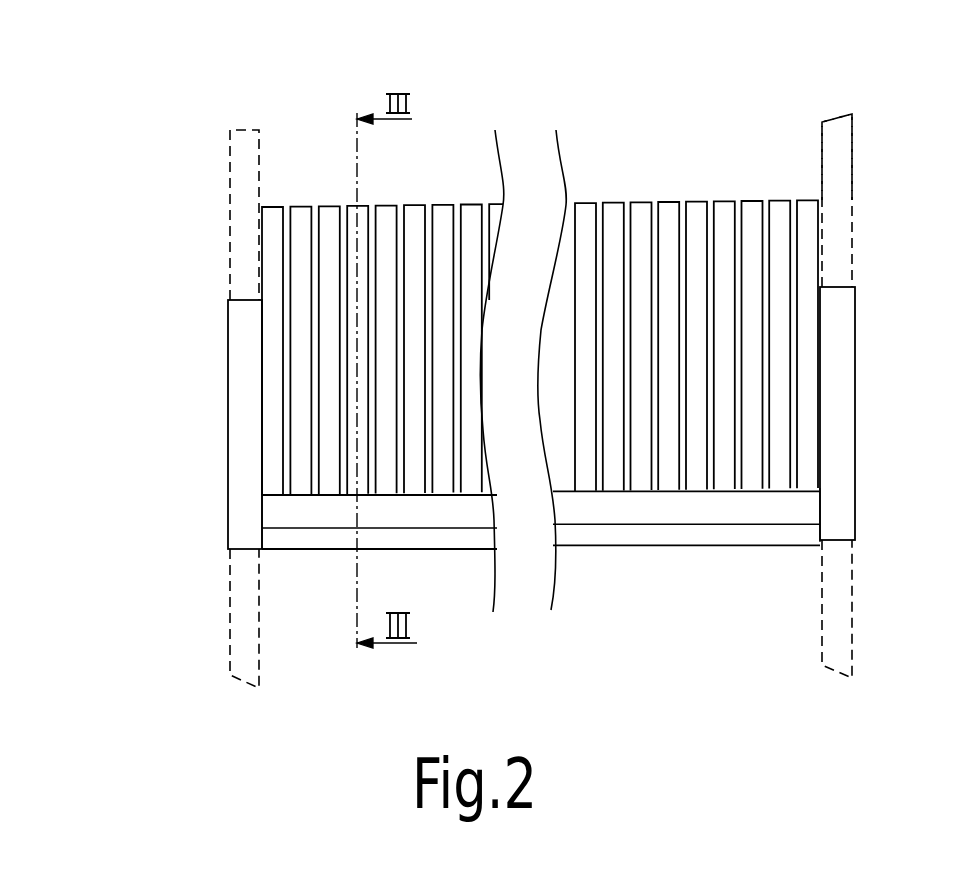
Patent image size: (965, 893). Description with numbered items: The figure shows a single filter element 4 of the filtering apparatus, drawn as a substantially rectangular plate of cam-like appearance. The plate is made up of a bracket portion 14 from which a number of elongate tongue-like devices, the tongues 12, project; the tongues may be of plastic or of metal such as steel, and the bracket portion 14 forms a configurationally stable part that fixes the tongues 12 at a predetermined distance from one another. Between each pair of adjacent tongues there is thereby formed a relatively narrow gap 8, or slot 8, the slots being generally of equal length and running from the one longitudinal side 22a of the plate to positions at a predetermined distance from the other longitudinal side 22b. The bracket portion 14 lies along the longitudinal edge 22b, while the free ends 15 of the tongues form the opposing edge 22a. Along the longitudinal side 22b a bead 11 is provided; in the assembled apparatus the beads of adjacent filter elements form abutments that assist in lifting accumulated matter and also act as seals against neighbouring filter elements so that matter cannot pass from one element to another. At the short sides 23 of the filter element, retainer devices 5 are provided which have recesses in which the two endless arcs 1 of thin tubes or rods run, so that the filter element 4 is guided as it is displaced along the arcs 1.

The endless arc 1 is at (838, 128).
The filter element 4 is at (615, 182).
The retainer device 5 is at (842, 387).
The gap 8 is at (685, 213).
The bead 11 is at (627, 535).
The tongue 12 is at (443, 253).
The bracket portion 14 is at (782, 508).
The free end 15 is at (588, 202).
The longitudinal edge 22a is at (335, 206).
The longitudinal edge 22b is at (320, 550).
The short side 23 is at (262, 264).